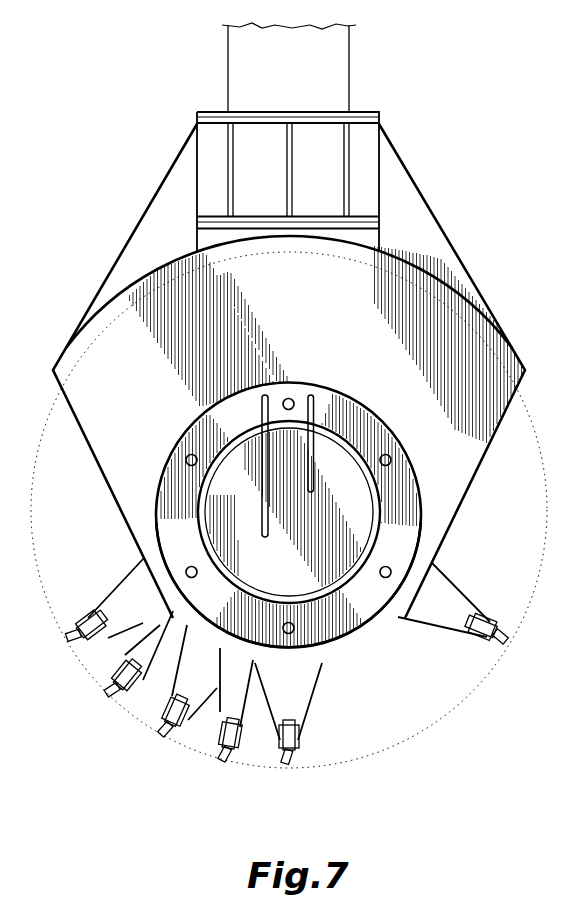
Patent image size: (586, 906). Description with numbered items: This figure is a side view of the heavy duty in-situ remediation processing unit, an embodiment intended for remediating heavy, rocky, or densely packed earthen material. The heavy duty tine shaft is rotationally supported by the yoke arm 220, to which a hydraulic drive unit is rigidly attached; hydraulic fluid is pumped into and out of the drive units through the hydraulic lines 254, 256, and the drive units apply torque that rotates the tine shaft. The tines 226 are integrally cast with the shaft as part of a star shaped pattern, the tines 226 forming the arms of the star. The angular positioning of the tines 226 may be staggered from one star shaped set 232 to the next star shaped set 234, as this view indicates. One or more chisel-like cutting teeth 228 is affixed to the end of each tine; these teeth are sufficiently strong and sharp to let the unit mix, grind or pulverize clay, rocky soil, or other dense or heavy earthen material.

The yoke arm 220 is at (477, 425).
The tine 226 is at (312, 700).
The chisel-like cutting tooth 228 is at (74, 645).
The star shaped set 232 is at (277, 716).
The star shaped set 234 is at (222, 713).
The hydraulic line 254 is at (310, 460).
The hydraulic line 256 is at (262, 462).